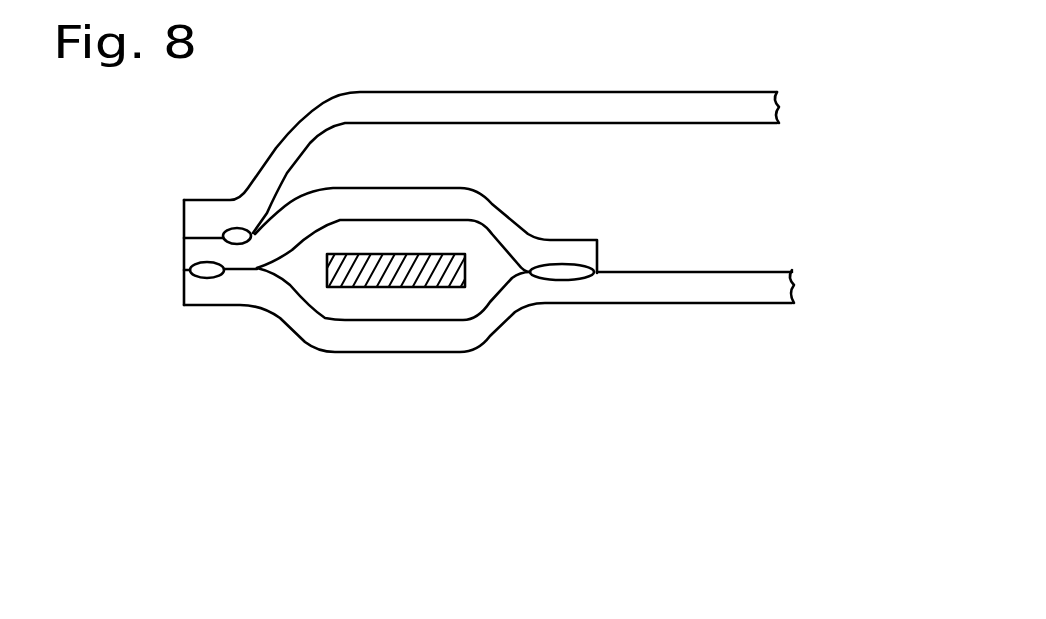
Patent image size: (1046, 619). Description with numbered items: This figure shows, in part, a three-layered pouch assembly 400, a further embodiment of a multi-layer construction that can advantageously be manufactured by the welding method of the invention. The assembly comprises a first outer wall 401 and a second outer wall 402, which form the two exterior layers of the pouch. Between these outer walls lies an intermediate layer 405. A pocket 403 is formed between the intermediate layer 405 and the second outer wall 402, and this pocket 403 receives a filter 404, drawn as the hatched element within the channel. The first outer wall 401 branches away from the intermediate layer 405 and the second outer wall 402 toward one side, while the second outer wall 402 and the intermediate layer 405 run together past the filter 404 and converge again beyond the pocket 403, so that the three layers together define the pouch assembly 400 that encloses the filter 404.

The three-layered pouch assembly 400 is at (461, 280).
The first outer wall 401 is at (697, 105).
The second outer wall 402 is at (665, 285).
The pocket 403 is at (513, 187).
The filter 404 is at (407, 280).
The intermediate layer 405 is at (425, 198).